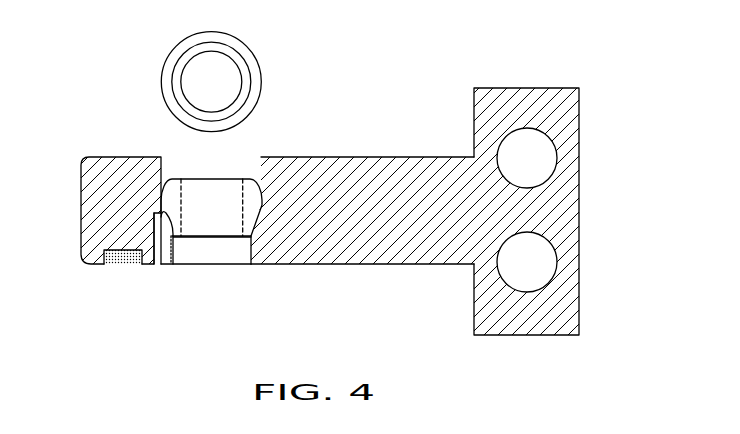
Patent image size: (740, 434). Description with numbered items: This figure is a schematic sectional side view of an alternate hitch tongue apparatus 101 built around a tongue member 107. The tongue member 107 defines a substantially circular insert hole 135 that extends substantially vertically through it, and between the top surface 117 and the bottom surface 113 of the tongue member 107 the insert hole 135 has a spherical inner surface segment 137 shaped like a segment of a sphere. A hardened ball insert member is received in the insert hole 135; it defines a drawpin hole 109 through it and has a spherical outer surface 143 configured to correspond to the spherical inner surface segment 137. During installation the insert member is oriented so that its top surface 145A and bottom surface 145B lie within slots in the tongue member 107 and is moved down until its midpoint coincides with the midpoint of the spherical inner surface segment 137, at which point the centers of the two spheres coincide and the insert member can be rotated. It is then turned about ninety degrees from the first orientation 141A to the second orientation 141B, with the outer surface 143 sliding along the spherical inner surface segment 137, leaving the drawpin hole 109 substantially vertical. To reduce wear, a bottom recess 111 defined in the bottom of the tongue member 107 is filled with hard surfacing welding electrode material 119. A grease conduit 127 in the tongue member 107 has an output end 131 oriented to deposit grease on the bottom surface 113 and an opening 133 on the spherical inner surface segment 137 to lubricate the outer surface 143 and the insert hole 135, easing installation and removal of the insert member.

The hitch tongue apparatus 101 is at (604, 59).
The tongue member 107 is at (81, 211).
The drawpin hole 109 is at (197, 72).
The bottom recess 111 is at (107, 266).
The bottom surface 113 is at (380, 267).
The top surface 117 is at (382, 157).
The hard surfacing welding electrode material 119 is at (125, 266).
The grease conduit 127 is at (160, 215).
The output end 131 is at (157, 266).
The opening 133 is at (173, 266).
The insert hole 135 is at (240, 266).
The spherical inner surface segment 137 is at (263, 207).
The ball insert member orientation 141A is at (263, 70).
The ball insert member orientation 141B is at (223, 237).
The spherical outer surface 143 is at (232, 34).
The top surface 145A is at (192, 179).
The bottom surface 145B is at (197, 237).